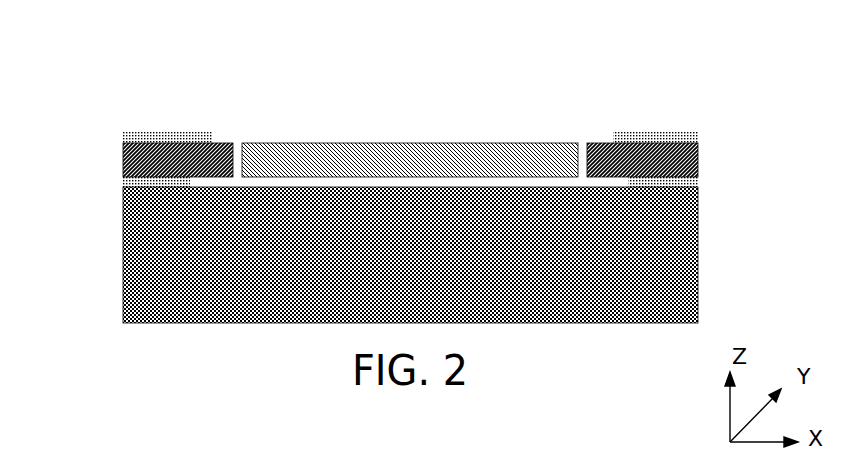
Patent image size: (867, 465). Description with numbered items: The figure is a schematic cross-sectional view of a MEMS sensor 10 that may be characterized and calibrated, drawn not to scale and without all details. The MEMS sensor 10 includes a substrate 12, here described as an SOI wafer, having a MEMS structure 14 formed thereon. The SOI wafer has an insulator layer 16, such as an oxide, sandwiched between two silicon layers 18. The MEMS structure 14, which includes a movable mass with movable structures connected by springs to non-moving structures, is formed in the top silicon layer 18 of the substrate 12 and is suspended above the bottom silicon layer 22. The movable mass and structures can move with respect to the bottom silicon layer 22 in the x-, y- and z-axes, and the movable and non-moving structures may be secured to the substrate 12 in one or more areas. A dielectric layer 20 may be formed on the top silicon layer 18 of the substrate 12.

The MEMS sensor 10 is at (488, 161).
The substrate 12 is at (117, 143).
The MEMS structure 14 is at (468, 134).
The insulator layer 16 is at (677, 180).
The silicon layer 18 is at (678, 160).
The dielectric layer 20 is at (663, 140).
The bottom silicon layer 22 is at (680, 288).